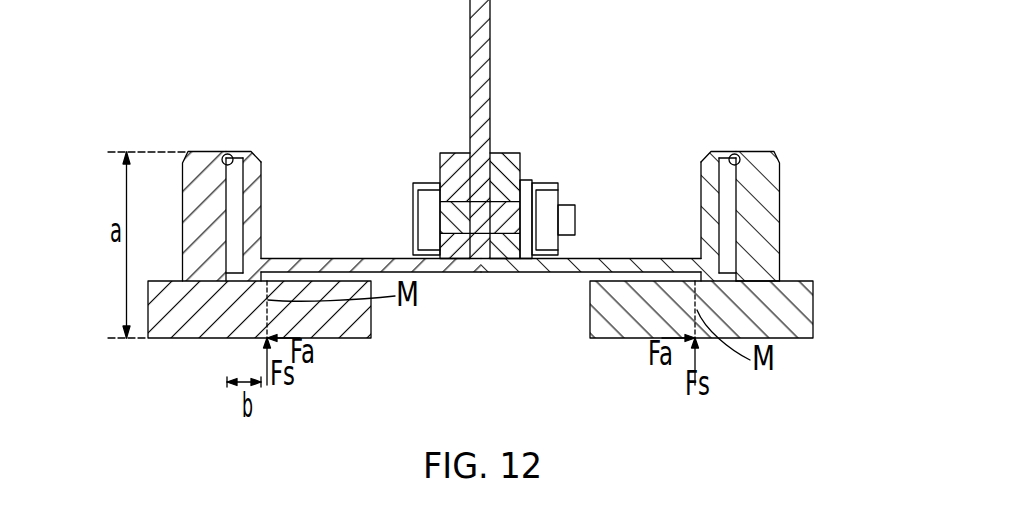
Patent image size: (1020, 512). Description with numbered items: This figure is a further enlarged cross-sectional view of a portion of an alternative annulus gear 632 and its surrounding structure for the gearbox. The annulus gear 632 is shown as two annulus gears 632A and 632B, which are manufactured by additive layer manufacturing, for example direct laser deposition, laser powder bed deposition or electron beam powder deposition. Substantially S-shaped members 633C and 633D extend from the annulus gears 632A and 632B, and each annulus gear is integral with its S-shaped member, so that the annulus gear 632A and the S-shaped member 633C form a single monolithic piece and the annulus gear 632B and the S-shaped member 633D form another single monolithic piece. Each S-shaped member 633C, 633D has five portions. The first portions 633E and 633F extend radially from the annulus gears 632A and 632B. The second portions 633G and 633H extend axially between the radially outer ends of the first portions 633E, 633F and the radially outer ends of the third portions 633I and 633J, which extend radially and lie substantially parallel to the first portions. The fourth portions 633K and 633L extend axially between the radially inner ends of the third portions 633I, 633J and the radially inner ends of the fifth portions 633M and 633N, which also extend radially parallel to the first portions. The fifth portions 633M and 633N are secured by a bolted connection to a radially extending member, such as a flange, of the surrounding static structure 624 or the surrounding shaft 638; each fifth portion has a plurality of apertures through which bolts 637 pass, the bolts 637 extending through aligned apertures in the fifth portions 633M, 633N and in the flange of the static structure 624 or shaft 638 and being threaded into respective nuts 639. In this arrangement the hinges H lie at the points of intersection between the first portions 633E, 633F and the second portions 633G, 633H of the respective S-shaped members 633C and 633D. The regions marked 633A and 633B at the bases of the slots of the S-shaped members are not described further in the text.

The annulus gear 632 is at (533, 233).
The annulus gear 632A is at (357, 320).
The annulus gear 632B is at (806, 326).
The bottom of left slot of bracket 633A is at (240, 251).
The bottom of right slot of bracket 633B is at (722, 266).
The S-shaped member 633C is at (128, 183).
The S-shaped member 633D is at (773, 219).
The first portion 633E is at (183, 213).
The first portion 633F is at (790, 283).
The second portion 633G is at (238, 153).
The second portion 633H is at (735, 151).
The third portion 633I is at (254, 199).
The third portion 633J is at (704, 207).
The fourth portion 633K is at (334, 261).
The fourth portion 633L is at (617, 260).
The fifth portion 633M is at (443, 154).
The fifth portion 633N is at (520, 154).
The bolt 637 is at (420, 183).
The surrounding shaft 638 is at (542, 129).
The surrounding static structure 624 is at (491, 34).
The nut 639 is at (585, 158).